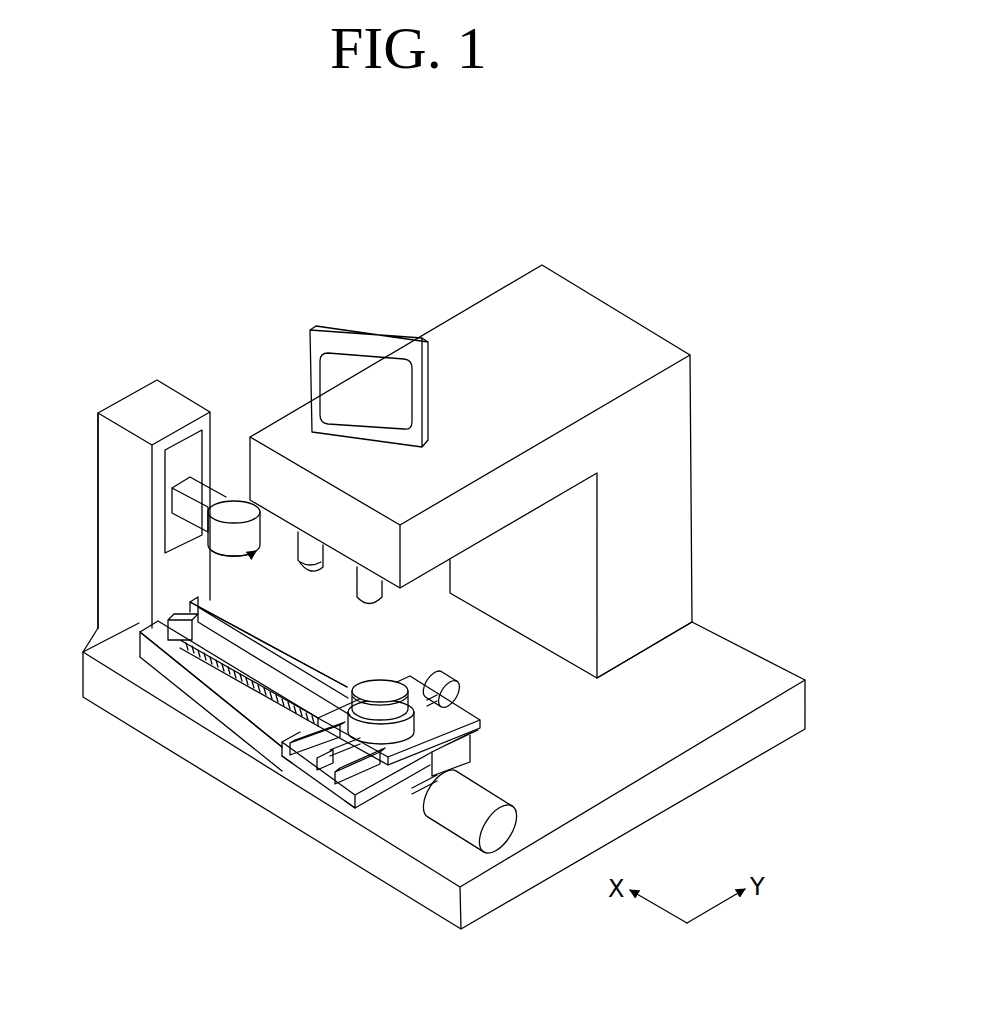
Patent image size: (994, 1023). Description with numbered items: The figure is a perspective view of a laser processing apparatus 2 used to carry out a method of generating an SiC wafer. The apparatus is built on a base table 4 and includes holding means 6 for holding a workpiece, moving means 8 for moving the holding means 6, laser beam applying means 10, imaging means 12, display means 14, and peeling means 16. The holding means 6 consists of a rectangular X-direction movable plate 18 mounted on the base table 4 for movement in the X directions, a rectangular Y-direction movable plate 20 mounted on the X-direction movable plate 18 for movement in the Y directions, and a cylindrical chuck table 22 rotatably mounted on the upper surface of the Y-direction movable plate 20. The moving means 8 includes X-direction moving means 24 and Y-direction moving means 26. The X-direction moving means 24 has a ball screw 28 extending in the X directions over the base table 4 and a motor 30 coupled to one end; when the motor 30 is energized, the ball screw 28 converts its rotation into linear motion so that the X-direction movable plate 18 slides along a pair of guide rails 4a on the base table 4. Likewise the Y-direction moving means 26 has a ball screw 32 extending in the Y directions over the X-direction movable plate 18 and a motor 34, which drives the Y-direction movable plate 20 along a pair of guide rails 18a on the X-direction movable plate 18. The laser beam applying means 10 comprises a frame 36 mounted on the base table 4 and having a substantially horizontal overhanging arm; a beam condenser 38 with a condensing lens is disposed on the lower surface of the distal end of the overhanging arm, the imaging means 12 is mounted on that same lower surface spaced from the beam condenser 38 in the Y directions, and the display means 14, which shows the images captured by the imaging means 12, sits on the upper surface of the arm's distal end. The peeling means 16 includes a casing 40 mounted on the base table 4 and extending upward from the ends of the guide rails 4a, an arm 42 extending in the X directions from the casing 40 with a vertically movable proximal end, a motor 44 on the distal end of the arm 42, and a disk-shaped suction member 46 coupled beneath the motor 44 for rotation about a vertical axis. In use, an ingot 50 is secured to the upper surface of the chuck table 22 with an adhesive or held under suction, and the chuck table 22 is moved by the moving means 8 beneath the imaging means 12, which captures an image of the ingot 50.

The laser processing apparatus 2 is at (192, 292).
The base table 4 is at (730, 657).
The guide rails 4a is at (186, 617).
The holding means 6 is at (286, 774).
The moving means 8 is at (441, 760).
The laser beam applying means 10 is at (474, 302).
The imaging means 12 is at (367, 590).
The display means 14 is at (382, 338).
The peeling means 16 is at (189, 392).
The X-direction movable plate 18 is at (343, 790).
The guide rails 18a is at (295, 817).
The Y-direction movable plate 20 is at (400, 745).
The chuck table 22 is at (412, 762).
The X-direction moving means 24 is at (425, 790).
The Y-direction moving means 26 is at (439, 713).
The ball screw 28 is at (455, 755).
The motor 30 is at (483, 800).
The ball screw 32 is at (475, 708).
The motor 34 is at (457, 685).
The frame 36 is at (678, 484).
The beam condenser 38 is at (298, 568).
The casing 40 is at (107, 462).
The arm 42 is at (202, 497).
The motor 44 is at (234, 506).
The suction member 46 is at (215, 553).
The ingot 50 is at (380, 688).